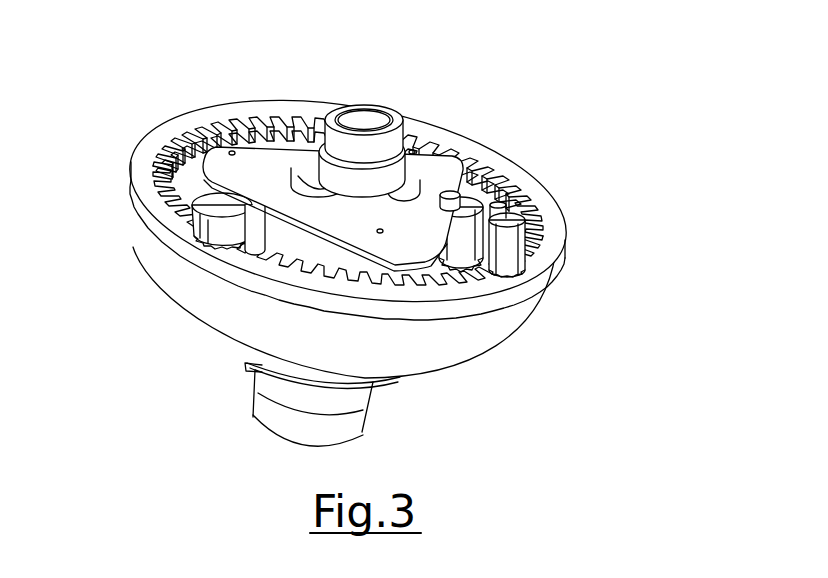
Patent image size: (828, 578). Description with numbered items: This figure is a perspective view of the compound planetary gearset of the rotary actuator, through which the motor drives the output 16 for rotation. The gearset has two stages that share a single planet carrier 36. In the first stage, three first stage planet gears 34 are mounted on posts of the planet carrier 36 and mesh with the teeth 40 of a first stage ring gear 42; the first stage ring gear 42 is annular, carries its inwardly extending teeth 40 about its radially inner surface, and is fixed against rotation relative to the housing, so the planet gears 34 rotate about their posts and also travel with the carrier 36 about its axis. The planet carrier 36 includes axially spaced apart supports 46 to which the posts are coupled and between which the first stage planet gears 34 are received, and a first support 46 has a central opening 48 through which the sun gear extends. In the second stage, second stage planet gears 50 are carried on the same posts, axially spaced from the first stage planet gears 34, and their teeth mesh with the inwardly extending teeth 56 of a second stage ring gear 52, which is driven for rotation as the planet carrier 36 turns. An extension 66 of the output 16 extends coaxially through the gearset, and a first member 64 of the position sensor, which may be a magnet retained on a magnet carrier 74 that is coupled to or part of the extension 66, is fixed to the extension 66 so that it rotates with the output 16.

The output 16 is at (353, 425).
The first stage planet gear 34 is at (190, 170).
The planet carrier 36 is at (225, 142).
The teeth of first stage ring gear 40 is at (498, 238).
The first stage ring gear 42 is at (543, 213).
The support 46 is at (434, 160).
The central opening 48 is at (431, 165).
The second stage planet gear 50 is at (247, 230).
The second stage ring gear 52 is at (510, 328).
The inwardly extending teeth of second stage ring gear 56 is at (498, 252).
The first member 64 is at (367, 120).
The extension 66 is at (335, 195).
The magnet carrier 74 is at (332, 138).